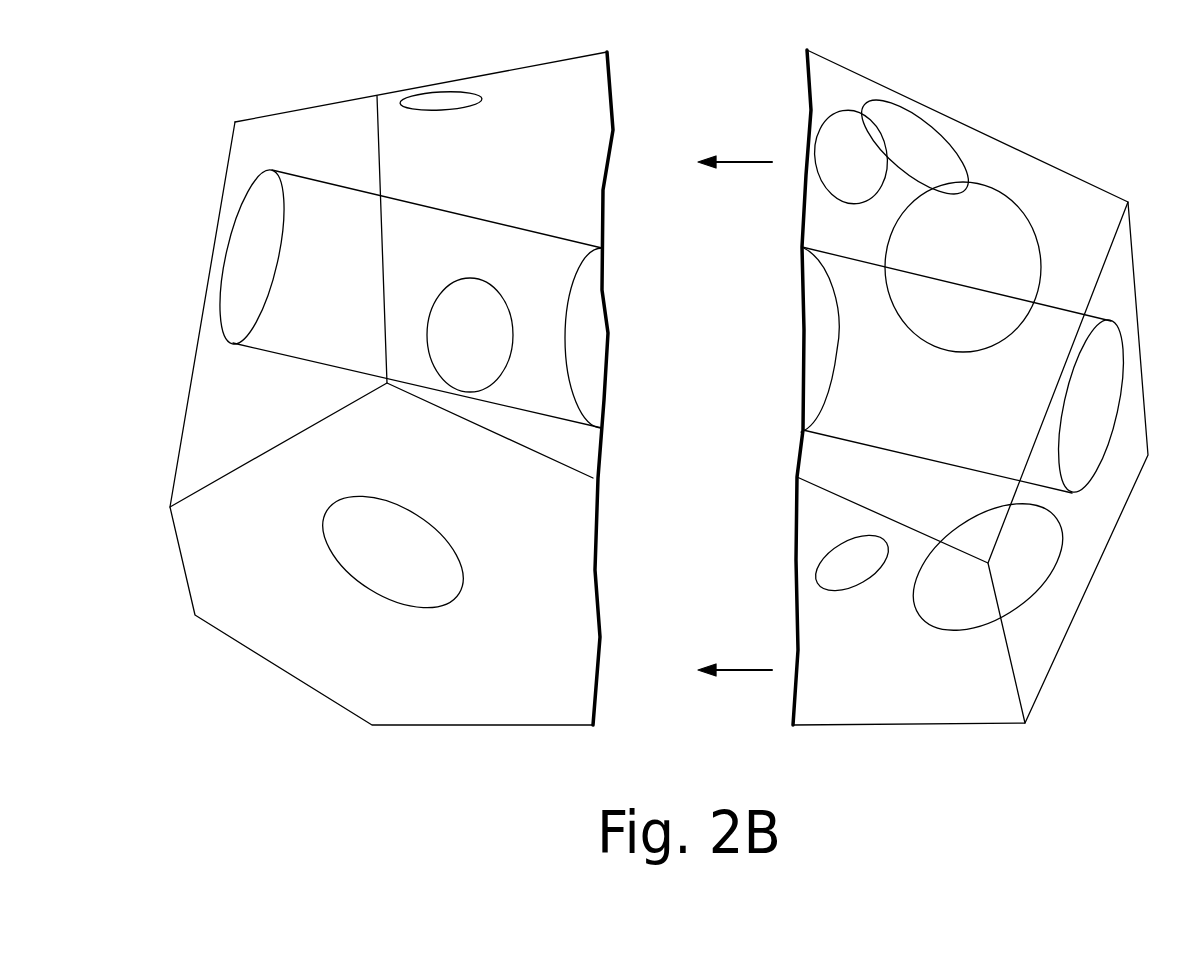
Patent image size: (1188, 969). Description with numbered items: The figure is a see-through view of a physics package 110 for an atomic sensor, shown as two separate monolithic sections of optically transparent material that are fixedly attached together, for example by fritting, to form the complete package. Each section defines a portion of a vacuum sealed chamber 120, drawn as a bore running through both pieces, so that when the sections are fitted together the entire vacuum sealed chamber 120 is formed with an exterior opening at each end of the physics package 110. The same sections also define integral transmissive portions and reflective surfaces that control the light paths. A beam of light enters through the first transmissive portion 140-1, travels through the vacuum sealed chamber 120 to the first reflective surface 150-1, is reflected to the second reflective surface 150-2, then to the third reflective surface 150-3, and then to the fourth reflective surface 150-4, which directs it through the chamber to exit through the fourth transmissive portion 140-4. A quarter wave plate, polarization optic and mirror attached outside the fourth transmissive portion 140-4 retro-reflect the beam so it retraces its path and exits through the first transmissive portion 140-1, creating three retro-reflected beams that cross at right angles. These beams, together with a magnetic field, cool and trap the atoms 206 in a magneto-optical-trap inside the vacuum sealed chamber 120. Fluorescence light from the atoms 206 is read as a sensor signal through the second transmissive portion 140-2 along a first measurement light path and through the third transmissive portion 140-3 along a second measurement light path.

The physics package 110 is at (148, 128).
The vacuum sealed chamber 120 is at (297, 345).
The atoms 206 is at (581, 257).
The third reflective surface 150-3 is at (457, 92).
The first transmissive portion 140-1 is at (483, 278).
The fourth reflective surface 150-4 is at (377, 575).
The first reflective surface 150-1 is at (998, 207).
The second transmissive portion 140-2 is at (828, 138).
The fourth transmissive portion 140-4 is at (925, 117).
The third transmissive portion 140-3 is at (852, 587).
The second reflective surface 150-2 is at (923, 623).